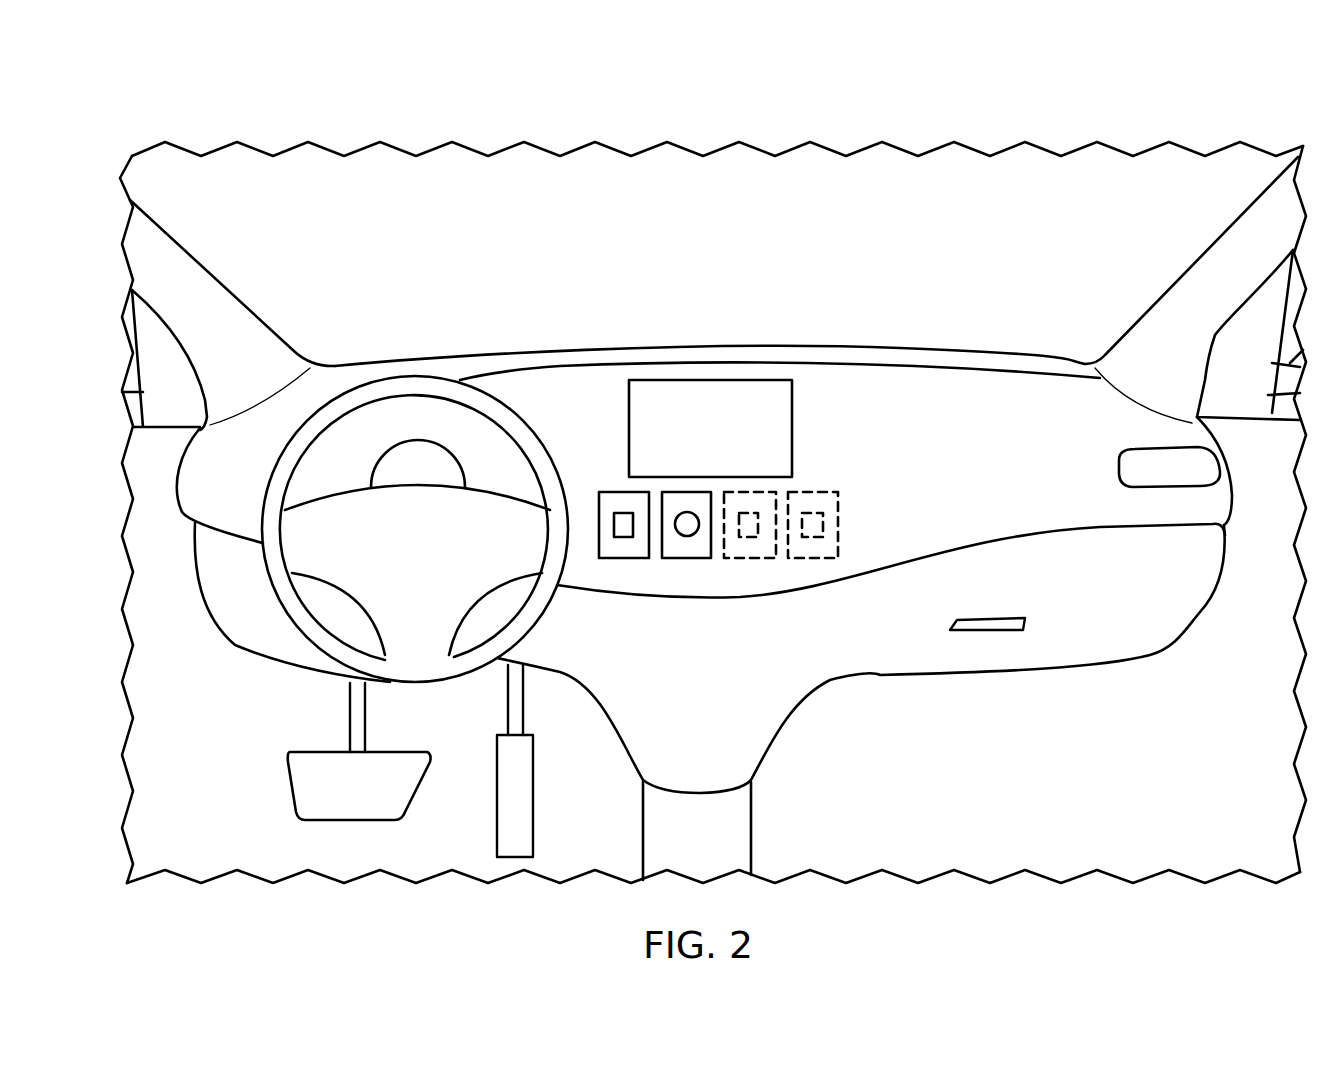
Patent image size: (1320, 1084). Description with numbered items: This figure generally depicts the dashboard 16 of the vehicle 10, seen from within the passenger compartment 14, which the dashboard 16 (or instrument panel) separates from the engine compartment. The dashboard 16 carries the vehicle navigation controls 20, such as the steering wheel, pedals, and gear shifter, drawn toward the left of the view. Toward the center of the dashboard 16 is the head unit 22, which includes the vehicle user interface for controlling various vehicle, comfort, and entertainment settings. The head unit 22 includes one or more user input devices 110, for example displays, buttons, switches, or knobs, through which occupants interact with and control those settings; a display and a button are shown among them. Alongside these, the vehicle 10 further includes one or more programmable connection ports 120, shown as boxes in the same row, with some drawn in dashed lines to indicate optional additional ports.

The vehicle 10 is at (157, 126).
The passenger compartment 14 is at (232, 180).
The dashboard 16 is at (444, 305).
The vehicle navigation controls 20 is at (350, 358).
The head unit 22 is at (590, 306).
The user input devices 110 is at (640, 375).
The programmable connection ports 120 is at (624, 558).